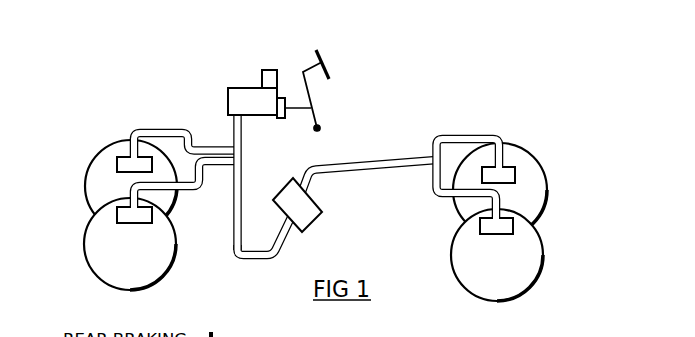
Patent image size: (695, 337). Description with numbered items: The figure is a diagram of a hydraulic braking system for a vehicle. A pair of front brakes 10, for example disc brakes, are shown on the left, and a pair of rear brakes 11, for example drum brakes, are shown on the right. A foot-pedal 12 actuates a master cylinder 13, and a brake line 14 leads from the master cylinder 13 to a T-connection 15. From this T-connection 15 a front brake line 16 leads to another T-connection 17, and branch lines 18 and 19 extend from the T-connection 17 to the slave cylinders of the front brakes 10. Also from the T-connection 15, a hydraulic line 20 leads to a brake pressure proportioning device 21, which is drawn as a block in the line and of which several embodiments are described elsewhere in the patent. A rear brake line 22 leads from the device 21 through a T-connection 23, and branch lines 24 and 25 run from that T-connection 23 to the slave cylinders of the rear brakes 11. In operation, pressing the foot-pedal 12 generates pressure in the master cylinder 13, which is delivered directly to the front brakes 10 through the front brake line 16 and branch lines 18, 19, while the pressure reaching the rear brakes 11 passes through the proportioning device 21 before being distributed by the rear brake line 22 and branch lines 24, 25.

The front brakes 10 is at (120, 157).
The rear brakes 11 is at (515, 175).
The foot-pedal 12 is at (322, 62).
The master cylinder 13 is at (252, 88).
The brake line 14 is at (232, 131).
The T-connection 15 is at (244, 158).
The front brake line 16 is at (209, 164).
The T-connection 17 is at (197, 148).
The branch line 18 is at (158, 128).
The branch line 19 is at (186, 194).
The hydraulic line 20 is at (229, 246).
The brake pressure proportioning device 21 is at (316, 193).
The rear brake line 22 is at (360, 160).
The T-connection 23 is at (432, 152).
The branch line 24 is at (458, 135).
The branch line 25 is at (447, 197).